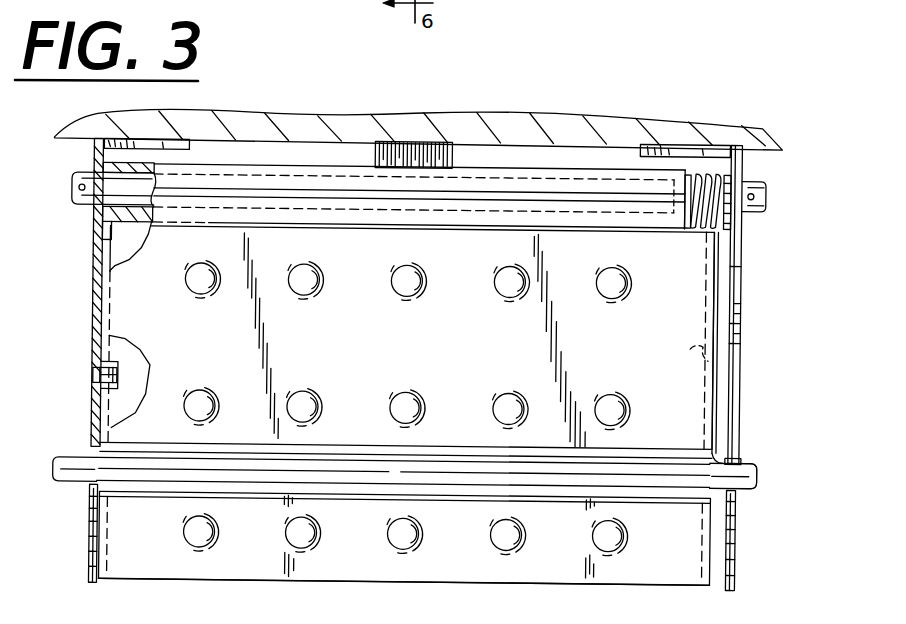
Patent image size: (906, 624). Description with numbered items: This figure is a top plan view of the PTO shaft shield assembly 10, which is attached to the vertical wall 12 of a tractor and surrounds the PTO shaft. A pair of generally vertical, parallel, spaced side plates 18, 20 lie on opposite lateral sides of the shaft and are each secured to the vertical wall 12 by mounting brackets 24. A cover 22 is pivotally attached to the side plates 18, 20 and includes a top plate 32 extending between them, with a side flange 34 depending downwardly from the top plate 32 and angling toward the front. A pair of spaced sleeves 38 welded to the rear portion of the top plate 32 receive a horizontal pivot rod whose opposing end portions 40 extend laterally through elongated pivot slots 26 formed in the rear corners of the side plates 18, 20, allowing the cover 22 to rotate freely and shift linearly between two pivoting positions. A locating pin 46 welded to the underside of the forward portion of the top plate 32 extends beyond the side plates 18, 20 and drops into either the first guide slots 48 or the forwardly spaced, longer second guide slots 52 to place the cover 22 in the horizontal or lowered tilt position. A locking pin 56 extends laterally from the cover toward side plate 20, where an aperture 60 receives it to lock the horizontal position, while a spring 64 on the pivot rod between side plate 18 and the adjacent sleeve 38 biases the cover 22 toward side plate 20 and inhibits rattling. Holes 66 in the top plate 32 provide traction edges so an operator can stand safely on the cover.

The PTO shaft shield assembly 10 is at (776, 278).
The vertical wall 12 is at (332, 129).
The side plate 18 is at (748, 384).
The side plate 20 is at (80, 330).
The cover 22 is at (146, 595).
The mounting bracket 24 is at (137, 143).
The pivot slot 26 is at (99, 256).
The top plate 32 is at (214, 583).
The side flange 34 is at (714, 335).
The sleeve 38 is at (562, 196).
The end portion 40 is at (70, 188).
The locating pin 46 is at (747, 466).
The first guide slot 48 is at (92, 456).
The second guide slot 52 is at (90, 508).
The locking pin 56 is at (120, 378).
The aperture 60 is at (93, 379).
The spring 64 is at (716, 192).
The holes 66 is at (308, 289).